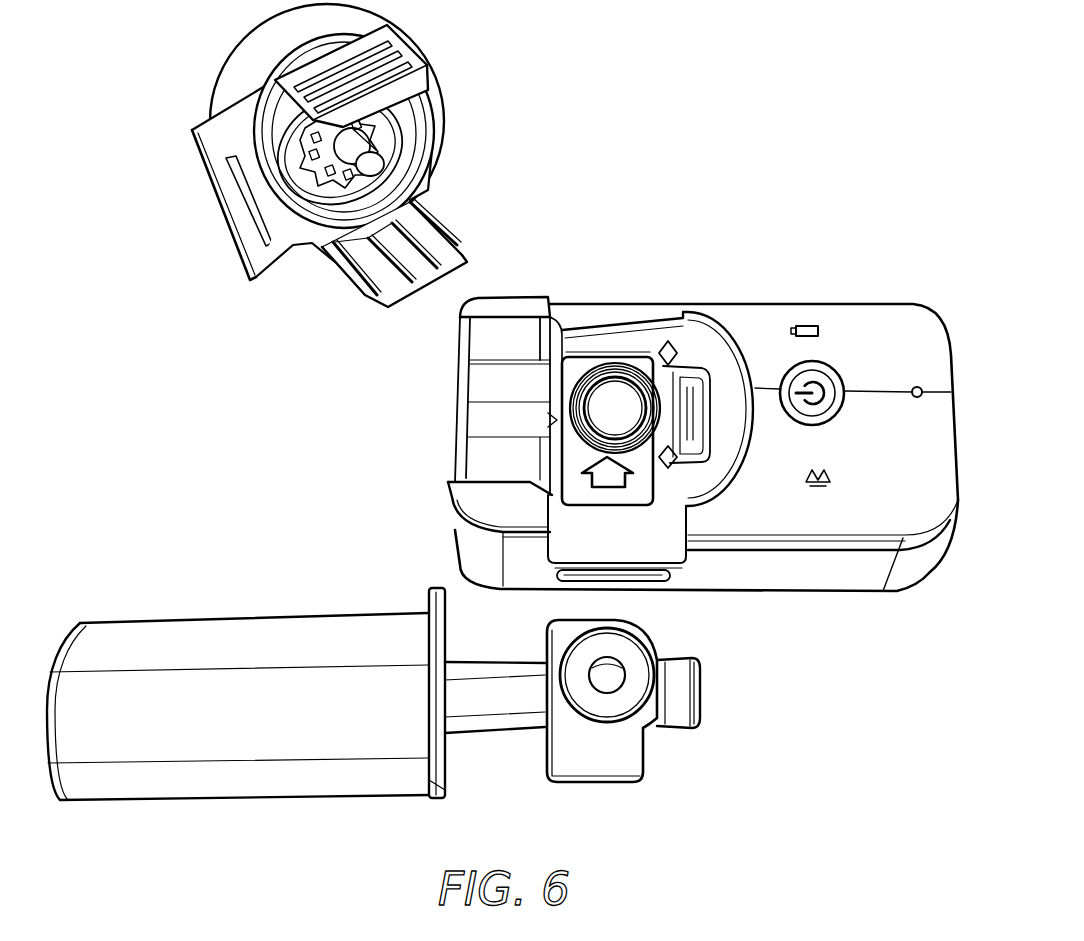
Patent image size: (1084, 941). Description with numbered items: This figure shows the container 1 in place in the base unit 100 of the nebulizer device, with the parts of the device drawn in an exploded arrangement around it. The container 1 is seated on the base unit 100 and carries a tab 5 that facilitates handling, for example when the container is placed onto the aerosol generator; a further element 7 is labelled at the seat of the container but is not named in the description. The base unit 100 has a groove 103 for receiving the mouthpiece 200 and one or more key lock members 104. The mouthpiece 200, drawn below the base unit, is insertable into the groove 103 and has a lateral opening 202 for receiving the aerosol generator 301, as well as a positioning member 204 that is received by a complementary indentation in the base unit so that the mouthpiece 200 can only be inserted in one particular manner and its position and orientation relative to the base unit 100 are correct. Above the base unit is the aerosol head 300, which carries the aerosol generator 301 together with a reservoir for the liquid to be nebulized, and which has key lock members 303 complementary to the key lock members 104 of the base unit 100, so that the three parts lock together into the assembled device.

The container 1 is at (640, 370).
The tab 5 is at (643, 482).
The receiving ring 7 is at (608, 392).
The base unit 100 is at (851, 318).
The groove 103 is at (480, 418).
The key lock members 104 is at (653, 582).
The mouthpiece 200 is at (376, 632).
The lateral opening 202 is at (610, 680).
The positioning member 204 is at (600, 770).
The aerosol head 300 is at (231, 50).
The aerosol generator 301 is at (381, 137).
The key lock members 303 is at (397, 288).